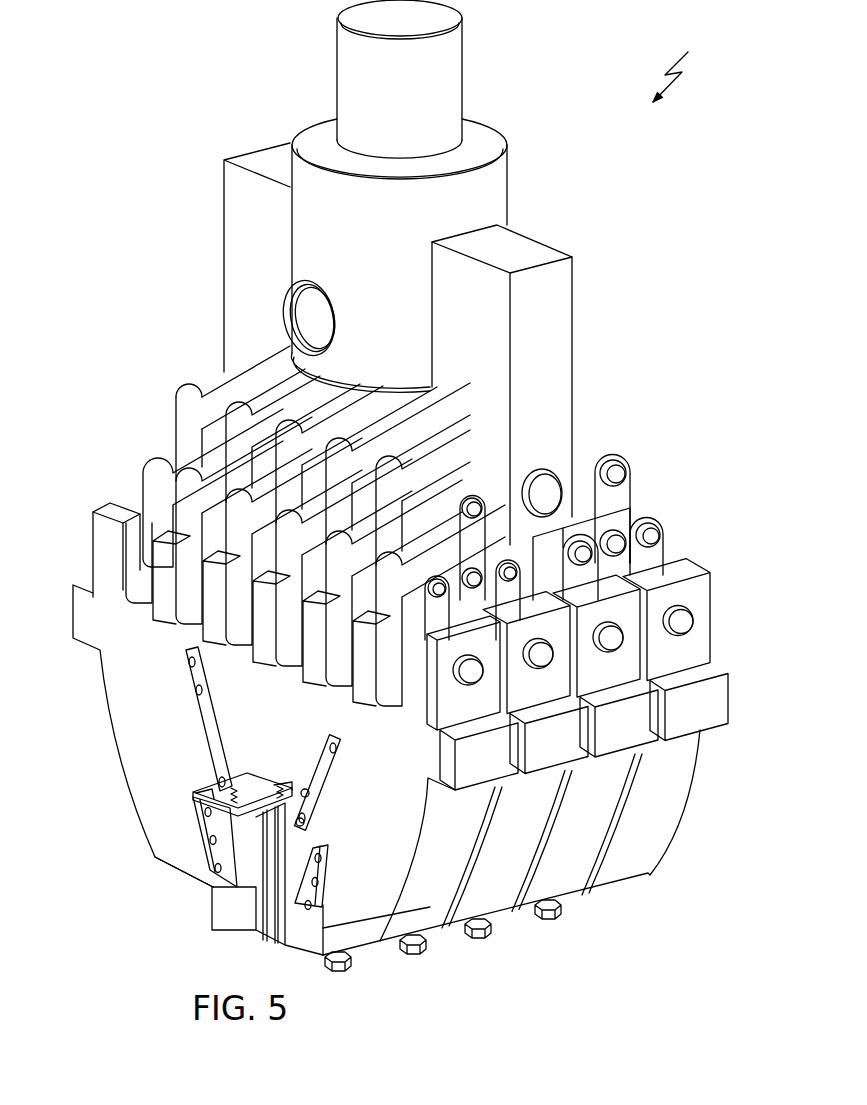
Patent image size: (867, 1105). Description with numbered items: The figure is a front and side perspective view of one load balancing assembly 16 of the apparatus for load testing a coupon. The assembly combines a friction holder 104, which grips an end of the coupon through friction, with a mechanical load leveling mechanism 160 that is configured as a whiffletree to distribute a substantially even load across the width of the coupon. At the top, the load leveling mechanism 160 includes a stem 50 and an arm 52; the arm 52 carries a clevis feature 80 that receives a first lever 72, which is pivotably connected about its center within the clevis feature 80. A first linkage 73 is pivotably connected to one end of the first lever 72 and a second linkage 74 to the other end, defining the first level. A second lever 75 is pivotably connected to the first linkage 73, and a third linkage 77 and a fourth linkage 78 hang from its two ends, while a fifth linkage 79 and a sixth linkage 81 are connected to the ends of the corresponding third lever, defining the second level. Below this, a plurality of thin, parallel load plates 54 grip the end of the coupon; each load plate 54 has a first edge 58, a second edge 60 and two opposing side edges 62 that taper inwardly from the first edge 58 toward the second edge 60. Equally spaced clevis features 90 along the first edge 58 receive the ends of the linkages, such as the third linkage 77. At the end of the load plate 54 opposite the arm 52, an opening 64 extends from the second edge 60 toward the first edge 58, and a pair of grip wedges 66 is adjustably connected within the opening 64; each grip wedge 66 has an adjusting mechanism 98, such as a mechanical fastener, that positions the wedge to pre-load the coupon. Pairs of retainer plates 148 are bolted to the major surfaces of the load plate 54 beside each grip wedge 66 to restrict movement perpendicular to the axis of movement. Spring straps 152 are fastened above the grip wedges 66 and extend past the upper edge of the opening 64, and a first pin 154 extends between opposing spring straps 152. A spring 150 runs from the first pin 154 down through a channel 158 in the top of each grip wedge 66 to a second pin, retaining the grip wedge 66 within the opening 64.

The load balancing assembly 16 is at (681, 65).
The stem 50 is at (462, 75).
The arm 52 is at (572, 340).
The load plate 54 is at (118, 705).
The first edge 58 is at (117, 507).
The second edge 60 is at (167, 867).
The side edge 62 is at (100, 650).
The opening 64 is at (245, 778).
The grip wedge 66 is at (232, 915).
The first lever 72 is at (237, 387).
The first linkage 73 is at (180, 393).
The second linkage 74 is at (620, 512).
The second lever 75 is at (193, 475).
The third linkage 77 is at (160, 468).
The fourth linkage 78 is at (538, 596).
The fifth linkage 79 is at (570, 533).
The clevis feature 80 is at (275, 362).
The sixth linkage 81 is at (660, 548).
The clevis feature 90 is at (140, 606).
The adjusting mechanism 98 is at (348, 963).
The friction holder 104 is at (195, 905).
The retainer plate 148 is at (208, 830).
The spring 150 is at (280, 790).
The spring strap 152 is at (195, 712).
The first pin 154 is at (235, 793).
The channel 158 is at (305, 795).
The load leveling mechanism 160 is at (175, 420).